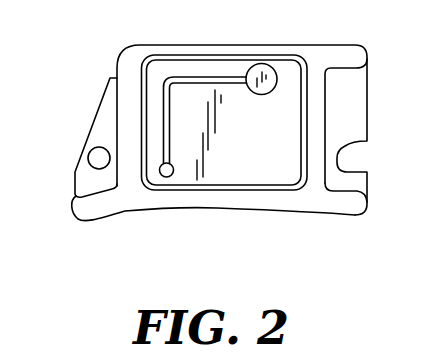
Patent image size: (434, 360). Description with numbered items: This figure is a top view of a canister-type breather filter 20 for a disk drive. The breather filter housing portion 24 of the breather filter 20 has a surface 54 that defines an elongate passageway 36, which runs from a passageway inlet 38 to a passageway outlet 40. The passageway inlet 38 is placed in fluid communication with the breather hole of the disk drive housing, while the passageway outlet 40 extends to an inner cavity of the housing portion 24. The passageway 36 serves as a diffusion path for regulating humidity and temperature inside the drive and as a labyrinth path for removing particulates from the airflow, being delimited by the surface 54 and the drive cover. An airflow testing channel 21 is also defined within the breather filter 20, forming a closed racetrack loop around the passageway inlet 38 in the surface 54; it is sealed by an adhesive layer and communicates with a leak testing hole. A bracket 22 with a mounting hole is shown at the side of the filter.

The breather filter 20 is at (87, 55).
The airflow testing channel 21 is at (270, 192).
The mounting bracket 22 is at (102, 211).
The breather filter housing portion 24 is at (293, 103).
The elongate passageway 36 is at (165, 112).
The passageway inlet 38 is at (259, 66).
The passageway outlet 40 is at (166, 172).
The surface 54 is at (148, 198).